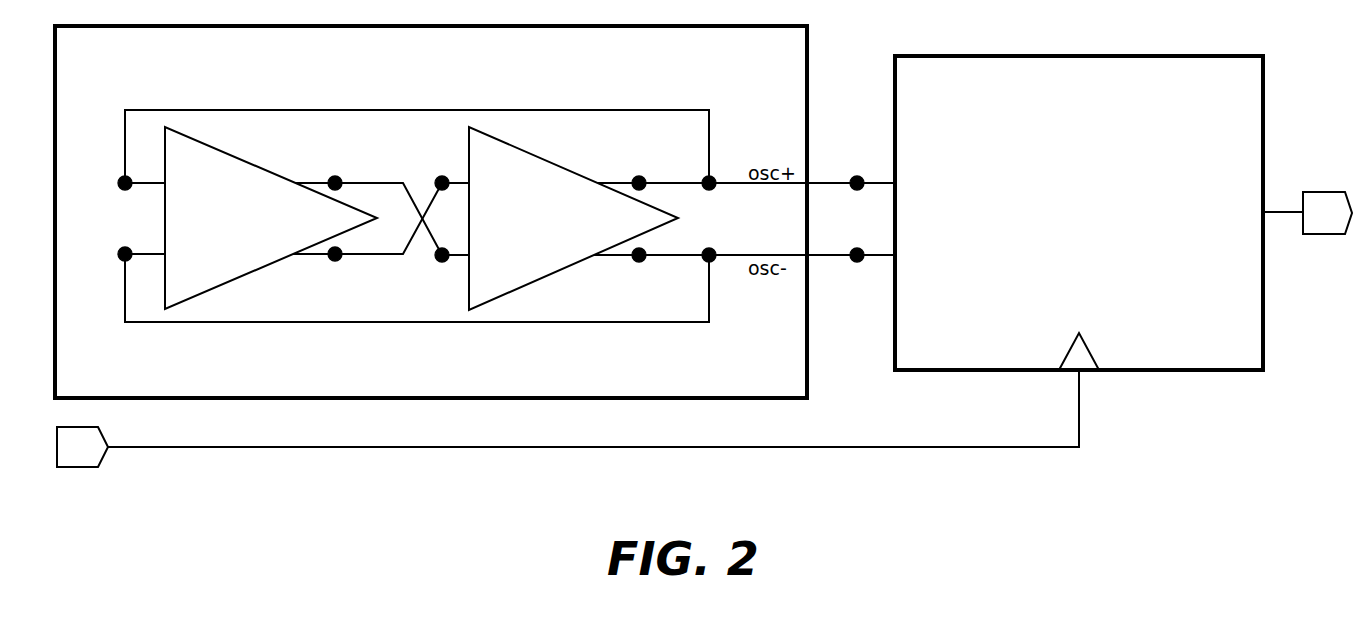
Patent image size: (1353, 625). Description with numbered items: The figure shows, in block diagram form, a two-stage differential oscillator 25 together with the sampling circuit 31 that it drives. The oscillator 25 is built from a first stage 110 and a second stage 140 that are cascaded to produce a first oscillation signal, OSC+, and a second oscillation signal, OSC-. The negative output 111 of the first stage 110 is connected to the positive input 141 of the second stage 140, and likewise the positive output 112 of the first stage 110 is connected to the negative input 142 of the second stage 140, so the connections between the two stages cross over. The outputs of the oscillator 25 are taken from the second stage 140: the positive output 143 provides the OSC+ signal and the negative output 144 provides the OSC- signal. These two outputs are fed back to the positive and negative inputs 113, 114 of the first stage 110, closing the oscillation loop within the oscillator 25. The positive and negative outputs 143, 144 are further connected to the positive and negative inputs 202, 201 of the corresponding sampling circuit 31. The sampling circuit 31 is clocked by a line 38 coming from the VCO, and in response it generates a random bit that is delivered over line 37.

The differential oscillator 25 is at (784, 63).
The sampling circuit 31 is at (1237, 96).
The first stage 110 is at (233, 231).
The second stage 140 is at (536, 230).
The negative output 111 is at (305, 258).
The positive output 112 is at (318, 180).
The positive input 113 is at (140, 186).
The negative input 114 is at (150, 254).
The positive input 141 is at (456, 183).
The negative input 142 is at (458, 257).
The positive output 143 is at (626, 182).
The negative output 144 is at (622, 257).
The negative input 201 is at (870, 258).
The positive input 202 is at (870, 183).
The line 37 is at (1283, 213).
The line 38 is at (712, 446).